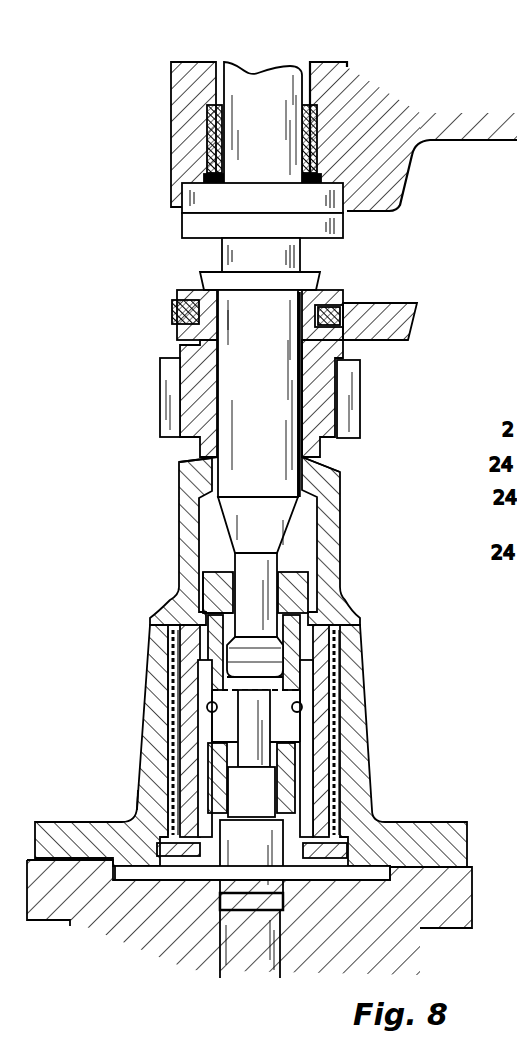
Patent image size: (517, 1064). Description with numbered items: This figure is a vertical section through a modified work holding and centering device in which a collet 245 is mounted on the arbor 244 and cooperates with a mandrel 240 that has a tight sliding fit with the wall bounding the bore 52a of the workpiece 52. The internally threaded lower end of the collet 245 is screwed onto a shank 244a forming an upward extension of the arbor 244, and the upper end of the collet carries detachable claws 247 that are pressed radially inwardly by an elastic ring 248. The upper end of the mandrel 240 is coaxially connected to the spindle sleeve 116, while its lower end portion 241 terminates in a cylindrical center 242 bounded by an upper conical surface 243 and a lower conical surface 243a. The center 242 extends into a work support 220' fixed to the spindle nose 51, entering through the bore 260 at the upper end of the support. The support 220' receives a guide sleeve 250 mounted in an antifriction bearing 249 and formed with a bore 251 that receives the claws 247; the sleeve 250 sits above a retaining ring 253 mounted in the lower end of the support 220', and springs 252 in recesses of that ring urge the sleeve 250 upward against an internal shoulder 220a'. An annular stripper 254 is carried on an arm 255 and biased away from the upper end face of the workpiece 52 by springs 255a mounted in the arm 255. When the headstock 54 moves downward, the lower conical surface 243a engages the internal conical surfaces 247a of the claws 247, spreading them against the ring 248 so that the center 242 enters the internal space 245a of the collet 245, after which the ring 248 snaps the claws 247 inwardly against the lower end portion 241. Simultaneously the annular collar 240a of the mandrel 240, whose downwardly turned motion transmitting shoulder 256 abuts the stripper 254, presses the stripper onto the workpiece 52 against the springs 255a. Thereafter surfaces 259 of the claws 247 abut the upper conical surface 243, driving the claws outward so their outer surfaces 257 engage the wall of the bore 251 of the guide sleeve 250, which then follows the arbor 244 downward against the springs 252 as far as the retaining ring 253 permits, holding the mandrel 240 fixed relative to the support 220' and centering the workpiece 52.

The spindle sleeve 116 is at (265, 74).
The headstock 54 is at (176, 135).
The motion transmitting shoulder 256 is at (203, 284).
The annular collar 240a is at (313, 283).
The annular stripper 254 is at (332, 306).
The springs 255a is at (341, 310).
The arm 255 is at (412, 312).
The bore 52a is at (301, 397).
The workpiece 52 is at (350, 432).
The mandrel 240 is at (300, 453).
The bore 260 is at (305, 474).
The work support 220' is at (274, 541).
The internal conical surfaces 247a is at (236, 556).
The outer surfaces 257 is at (204, 575).
The surfaces 259 is at (226, 611).
The lower end portion 241 is at (268, 567).
The claw 247 is at (306, 598).
The upper conical surface 243 is at (303, 612).
The internal shoulder 220a' is at (251, 739).
The bore 251 is at (207, 643).
The center 242 is at (283, 652).
The internal space 245a is at (226, 678).
The lower conical surface 243a is at (284, 672).
The guide sleeve 250 is at (190, 700).
The elastic ring 248 is at (301, 707).
The shank 244a is at (259, 733).
The collet 245 is at (291, 777).
The antifriction bearing 249 is at (146, 798).
The springs 252 is at (332, 833).
The retaining ring 253 is at (348, 852).
The spindle nose 51 is at (468, 888).
The arbor 244 is at (247, 953).